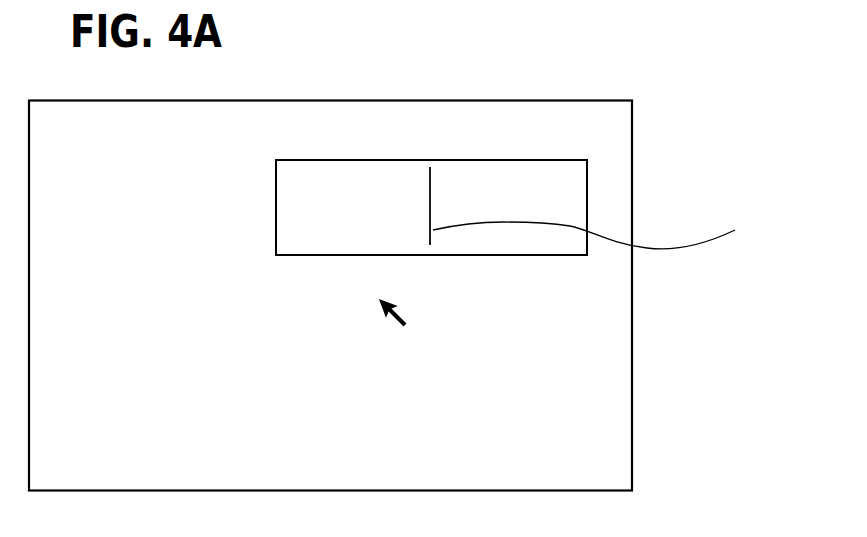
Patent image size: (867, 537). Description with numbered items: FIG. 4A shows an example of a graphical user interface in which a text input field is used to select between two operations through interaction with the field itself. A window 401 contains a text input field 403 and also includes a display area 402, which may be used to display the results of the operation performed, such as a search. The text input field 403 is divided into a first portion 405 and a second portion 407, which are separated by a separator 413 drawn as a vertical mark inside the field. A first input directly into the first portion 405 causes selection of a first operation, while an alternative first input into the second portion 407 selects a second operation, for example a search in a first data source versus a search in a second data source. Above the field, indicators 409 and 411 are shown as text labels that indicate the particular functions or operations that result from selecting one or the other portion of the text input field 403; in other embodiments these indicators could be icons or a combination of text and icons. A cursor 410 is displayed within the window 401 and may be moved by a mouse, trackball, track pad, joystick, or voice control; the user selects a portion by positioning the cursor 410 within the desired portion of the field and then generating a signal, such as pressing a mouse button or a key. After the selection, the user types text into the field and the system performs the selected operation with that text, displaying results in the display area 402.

The window 401 is at (632, 302).
The display area 402 is at (537, 374).
The text input field 403 is at (589, 208).
The first portion 405 is at (393, 175).
The second portion 407 is at (560, 174).
The indicator 409 is at (333, 101).
The cursor 410 is at (388, 320).
The indicator 411 is at (512, 102).
The separator 413 is at (600, 208).